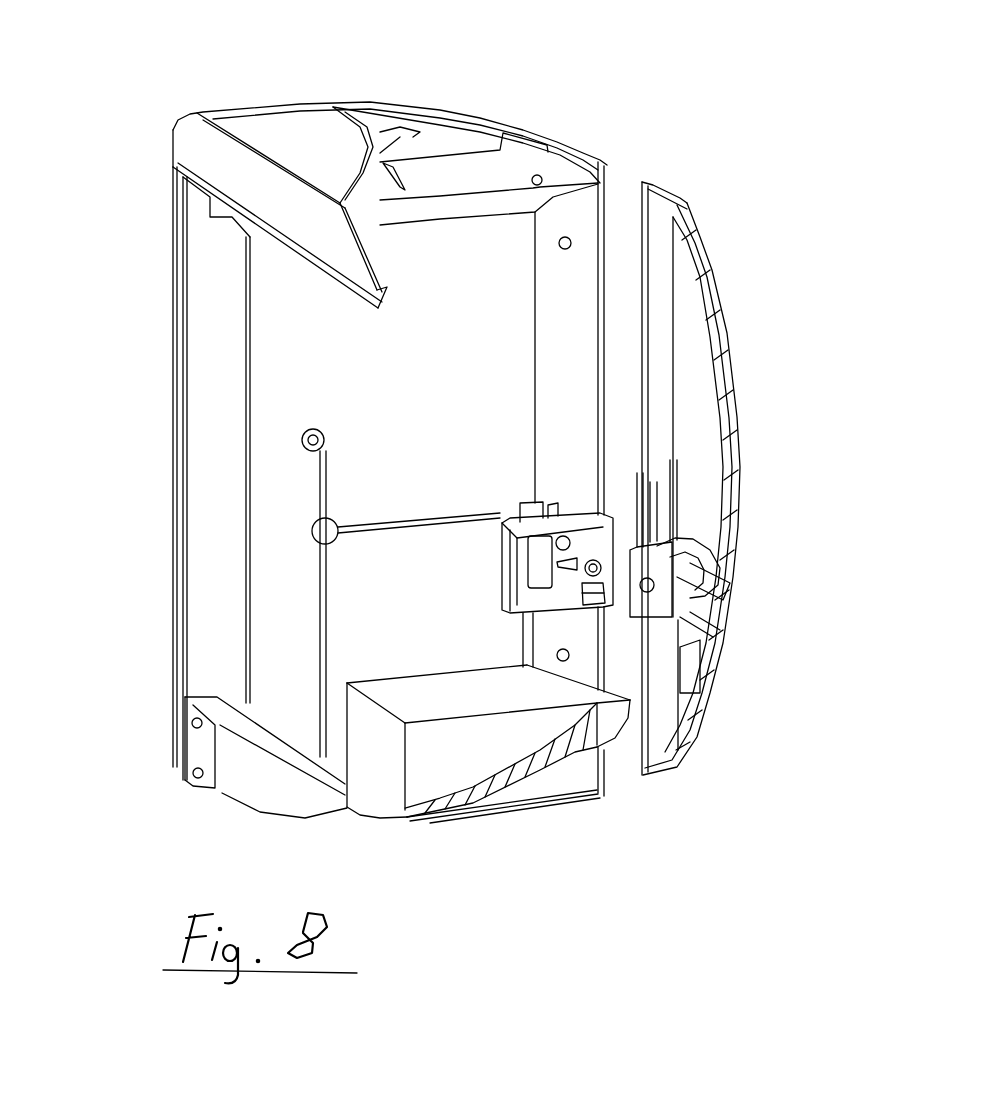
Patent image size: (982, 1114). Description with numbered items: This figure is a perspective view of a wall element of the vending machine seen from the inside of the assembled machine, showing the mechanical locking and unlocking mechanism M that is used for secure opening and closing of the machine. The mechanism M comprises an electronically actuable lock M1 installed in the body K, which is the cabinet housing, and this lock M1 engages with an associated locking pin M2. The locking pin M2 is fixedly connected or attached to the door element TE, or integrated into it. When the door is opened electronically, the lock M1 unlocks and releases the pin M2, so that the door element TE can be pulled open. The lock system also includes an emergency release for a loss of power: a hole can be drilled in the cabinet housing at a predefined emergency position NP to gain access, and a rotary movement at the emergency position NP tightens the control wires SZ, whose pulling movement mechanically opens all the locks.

The body K is at (395, 103).
The door element TE is at (653, 186).
The emergency position NP is at (302, 441).
The control wires SZ is at (390, 528).
The electronically actuable lock M1 is at (603, 523).
The locking pin M2 is at (643, 568).
The mechanical locking and unlocking mechanism M is at (586, 604).